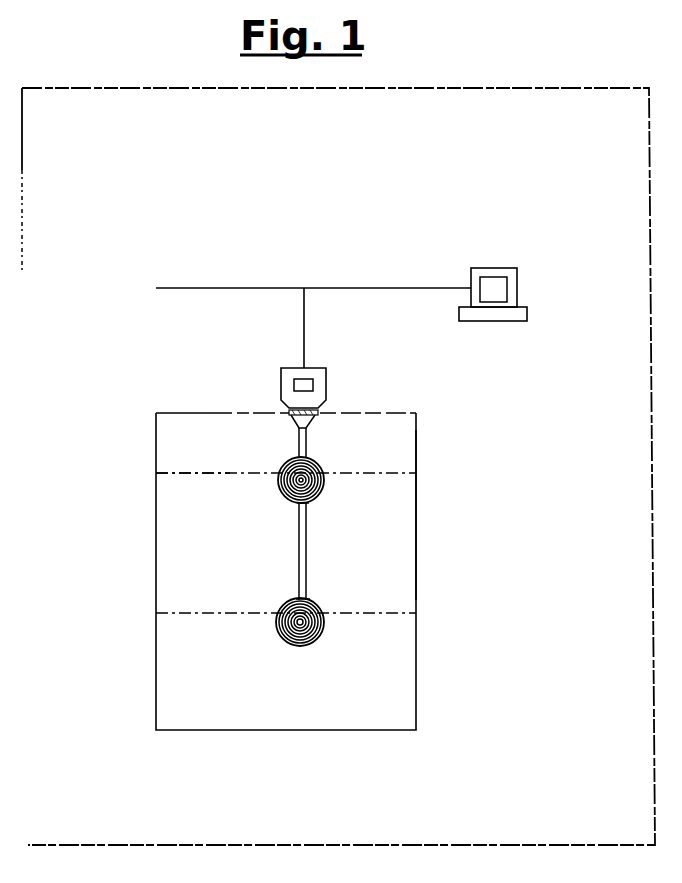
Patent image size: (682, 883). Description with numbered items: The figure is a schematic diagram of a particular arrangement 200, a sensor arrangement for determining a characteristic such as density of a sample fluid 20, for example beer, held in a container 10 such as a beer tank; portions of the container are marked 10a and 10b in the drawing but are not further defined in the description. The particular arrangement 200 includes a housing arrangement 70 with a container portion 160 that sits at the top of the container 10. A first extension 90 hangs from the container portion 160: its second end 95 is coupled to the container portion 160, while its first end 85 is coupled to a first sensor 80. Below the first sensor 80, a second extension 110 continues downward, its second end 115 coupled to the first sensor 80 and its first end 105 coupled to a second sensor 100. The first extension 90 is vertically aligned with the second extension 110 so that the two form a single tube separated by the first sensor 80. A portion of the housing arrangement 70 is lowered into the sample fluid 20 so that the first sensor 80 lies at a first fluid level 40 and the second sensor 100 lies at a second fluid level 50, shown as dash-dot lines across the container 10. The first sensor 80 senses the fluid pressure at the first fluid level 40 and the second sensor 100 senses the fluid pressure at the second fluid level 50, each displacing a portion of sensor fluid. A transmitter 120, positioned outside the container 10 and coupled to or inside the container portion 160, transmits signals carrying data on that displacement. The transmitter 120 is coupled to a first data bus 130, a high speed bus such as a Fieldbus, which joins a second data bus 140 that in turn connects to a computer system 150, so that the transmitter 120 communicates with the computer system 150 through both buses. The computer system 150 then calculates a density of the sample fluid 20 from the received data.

The particular arrangement 200 is at (578, 71).
The container 10 is at (454, 419).
The tank top 10a is at (203, 413).
The tank side wall 10b is at (416, 518).
The sample fluid 20 is at (417, 461).
The first fluid level 40 is at (207, 472).
The second fluid level 50 is at (383, 614).
The housing arrangement 70 is at (318, 422).
The first sensor 80 is at (278, 482).
The first end 85 is at (308, 448).
The first extension 90 is at (298, 440).
The second end 95 is at (295, 421).
The second sensor 100 is at (277, 622).
The first end 105 is at (298, 600).
The second extension 110 is at (308, 582).
The second end 115 is at (298, 501).
The transmitter 120 is at (296, 379).
The first data bus 130 is at (305, 320).
The second data bus 140 is at (323, 287).
The computer system 150 is at (514, 322).
The container portion 160 is at (327, 374).